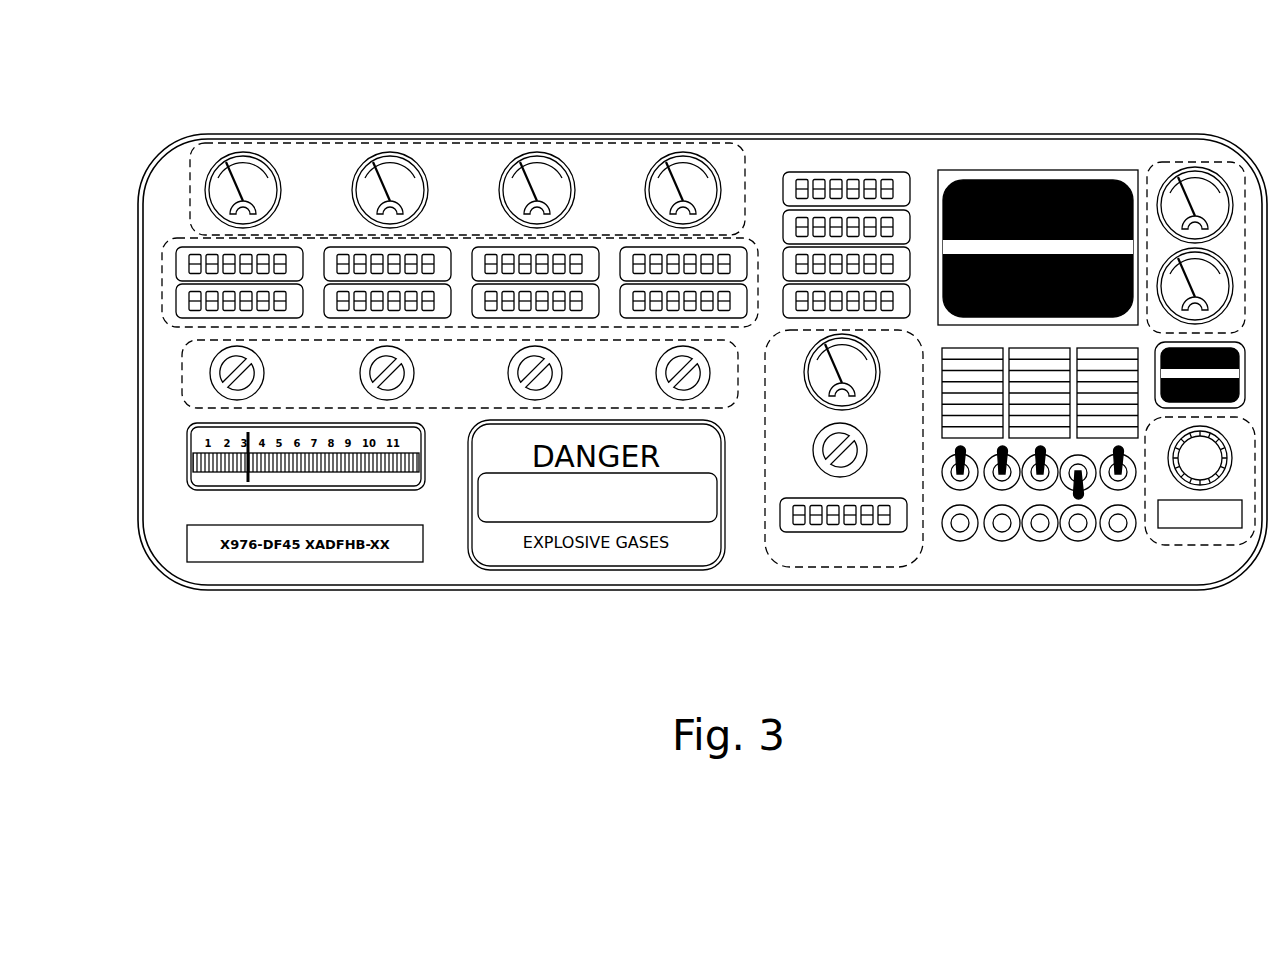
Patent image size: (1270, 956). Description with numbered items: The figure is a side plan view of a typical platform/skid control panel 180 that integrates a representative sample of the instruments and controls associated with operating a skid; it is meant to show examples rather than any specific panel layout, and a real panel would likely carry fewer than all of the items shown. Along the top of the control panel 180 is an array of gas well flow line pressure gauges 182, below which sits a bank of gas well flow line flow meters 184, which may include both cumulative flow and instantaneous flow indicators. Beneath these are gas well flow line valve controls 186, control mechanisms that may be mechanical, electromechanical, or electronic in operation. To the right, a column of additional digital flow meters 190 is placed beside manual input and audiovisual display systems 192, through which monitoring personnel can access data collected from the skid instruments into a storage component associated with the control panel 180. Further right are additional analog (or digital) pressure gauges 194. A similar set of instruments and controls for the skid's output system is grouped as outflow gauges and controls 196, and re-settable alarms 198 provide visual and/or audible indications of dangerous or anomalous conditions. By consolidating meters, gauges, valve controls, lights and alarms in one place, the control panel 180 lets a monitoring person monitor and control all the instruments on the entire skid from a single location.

The platform/skid control panel 180 is at (355, 128).
The gas well flow line pressure gauges 182 is at (613, 138).
The gas well flow line flow meters 184 is at (162, 282).
The gas well flow line valve controls 186 is at (182, 374).
The additional digital flow meters 190 is at (847, 162).
The manual input and audiovisual display systems 192 is at (1029, 165).
The additional analog (or digital) pressure gauges 194 is at (1190, 162).
The outflow gauges and controls 196 is at (845, 568).
The re-settable alarms 198 is at (1208, 547).